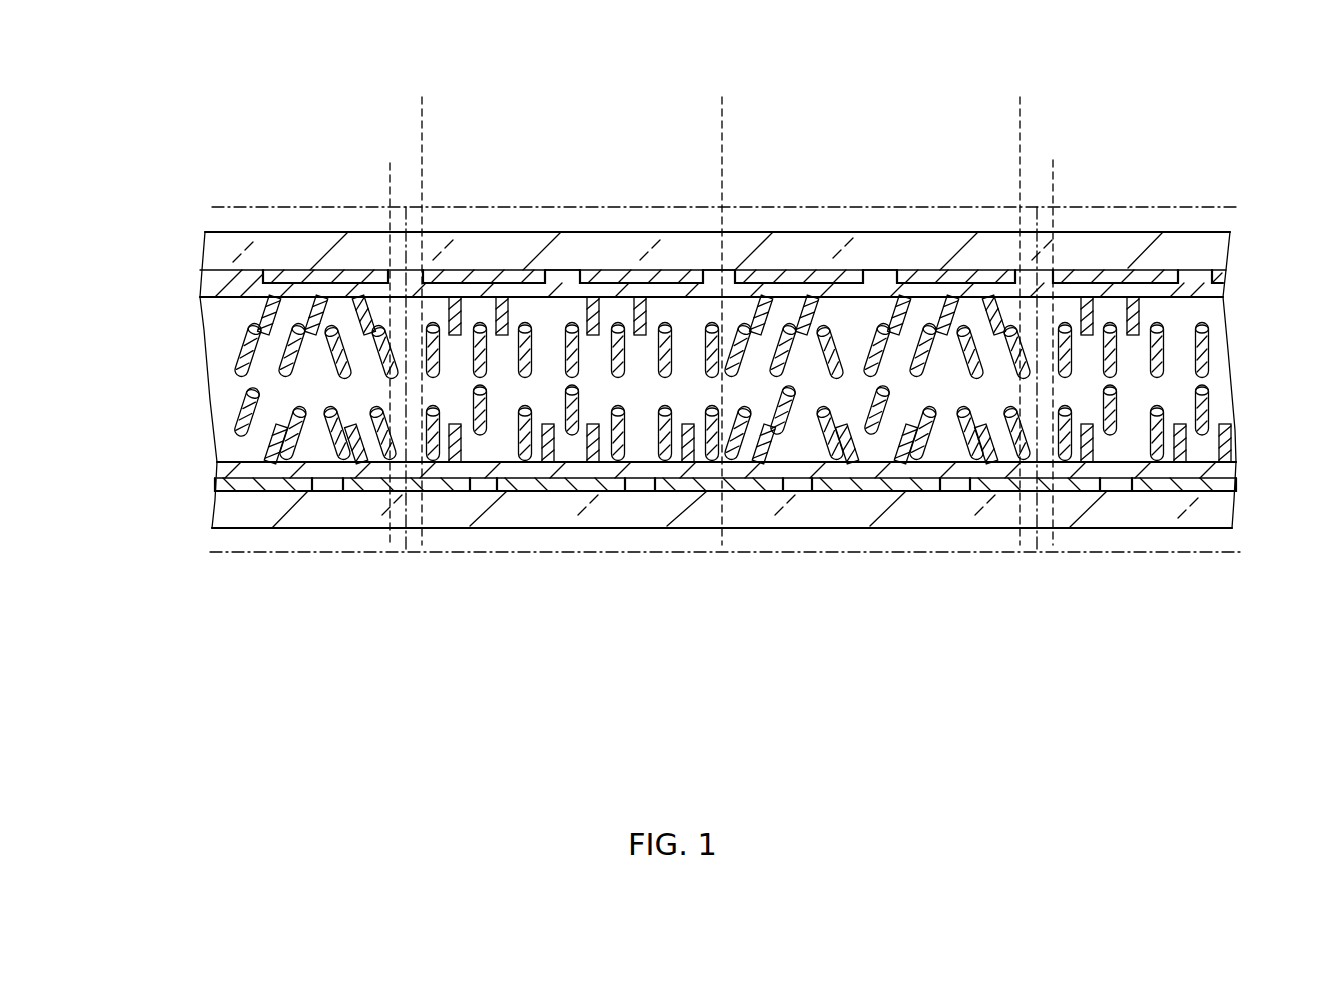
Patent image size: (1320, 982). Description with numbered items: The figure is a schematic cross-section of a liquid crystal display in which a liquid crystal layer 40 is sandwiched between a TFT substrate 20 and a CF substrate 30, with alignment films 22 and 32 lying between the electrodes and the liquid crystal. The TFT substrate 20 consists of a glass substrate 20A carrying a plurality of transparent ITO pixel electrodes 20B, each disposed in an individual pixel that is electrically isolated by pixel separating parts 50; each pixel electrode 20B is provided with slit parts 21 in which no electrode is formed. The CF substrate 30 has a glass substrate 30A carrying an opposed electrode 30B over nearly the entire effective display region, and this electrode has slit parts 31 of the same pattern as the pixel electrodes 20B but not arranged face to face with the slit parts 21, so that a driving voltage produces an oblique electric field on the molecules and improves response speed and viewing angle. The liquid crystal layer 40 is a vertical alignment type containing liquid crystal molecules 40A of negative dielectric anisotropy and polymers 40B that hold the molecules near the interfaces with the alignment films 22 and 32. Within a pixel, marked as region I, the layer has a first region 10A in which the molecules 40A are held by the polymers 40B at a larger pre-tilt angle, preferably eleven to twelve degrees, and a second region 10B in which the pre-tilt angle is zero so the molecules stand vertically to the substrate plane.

The first region 10A is at (383, 160).
The second region 10B is at (718, 97).
The TFT substrate 20 is at (122, 232).
The glass substrate 20A is at (204, 240).
The pixel electrode 20B is at (322, 270).
The slit part 21 is at (560, 263).
The alignment film 22 is at (1221, 297).
The CF substrate 30 is at (122, 472).
The glass substrate 30A is at (213, 514).
The opposed electrode 30B is at (458, 493).
The slit part 31 is at (483, 503).
The alignment film 32 is at (1229, 468).
The liquid crystal layer 40 is at (190, 302).
The liquid crystal molecule 40A is at (1208, 398).
The polymer 40B is at (1229, 433).
The pixel separating part 50 is at (403, 547).
The region I is at (283, 553).